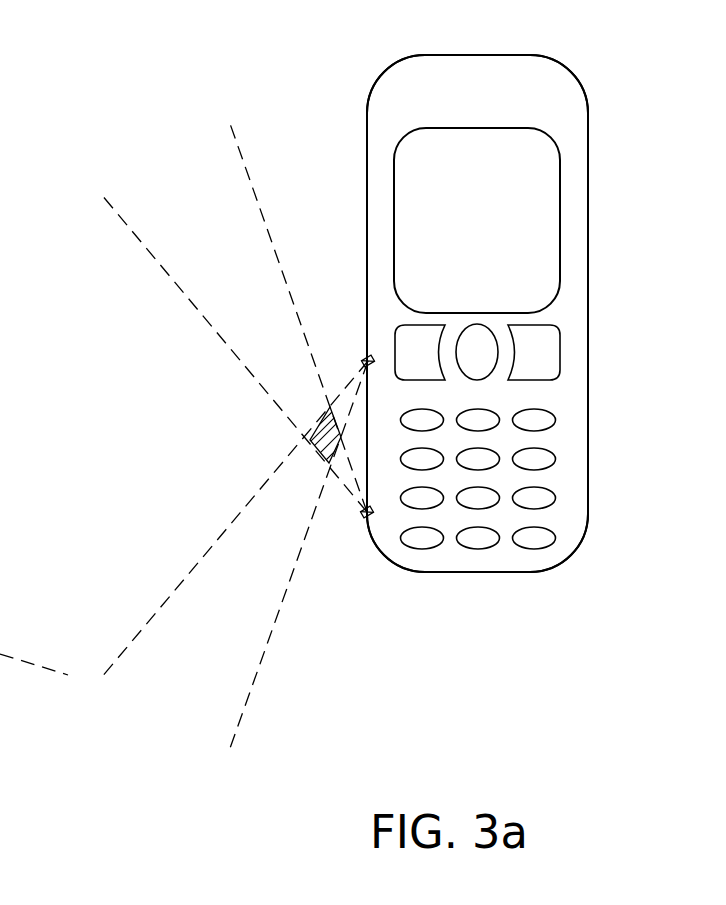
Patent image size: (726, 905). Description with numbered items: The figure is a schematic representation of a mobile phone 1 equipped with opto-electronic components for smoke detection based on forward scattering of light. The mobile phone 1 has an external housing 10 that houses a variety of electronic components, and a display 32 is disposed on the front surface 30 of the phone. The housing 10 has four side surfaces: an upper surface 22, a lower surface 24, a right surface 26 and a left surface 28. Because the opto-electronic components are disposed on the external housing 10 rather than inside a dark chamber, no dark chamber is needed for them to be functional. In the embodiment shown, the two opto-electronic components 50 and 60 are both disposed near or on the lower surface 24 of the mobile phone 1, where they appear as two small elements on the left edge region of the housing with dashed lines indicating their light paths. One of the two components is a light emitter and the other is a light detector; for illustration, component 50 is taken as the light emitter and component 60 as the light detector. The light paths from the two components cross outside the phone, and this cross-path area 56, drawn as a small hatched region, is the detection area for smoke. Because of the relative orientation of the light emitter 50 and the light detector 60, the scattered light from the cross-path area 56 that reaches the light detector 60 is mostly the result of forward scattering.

The mobile phone 1 is at (676, 107).
The external housing 10 is at (356, 167).
The upper surface 22 is at (460, 54).
The lower surface 24 is at (485, 572).
The right surface 26 is at (597, 303).
The left surface 28 is at (360, 250).
The front surface 30 is at (474, 108).
The display 32 is at (542, 240).
The opto-electronic component 50 is at (360, 352).
The cross-path area 56 is at (320, 432).
The opto-electronic component 60 is at (360, 527).